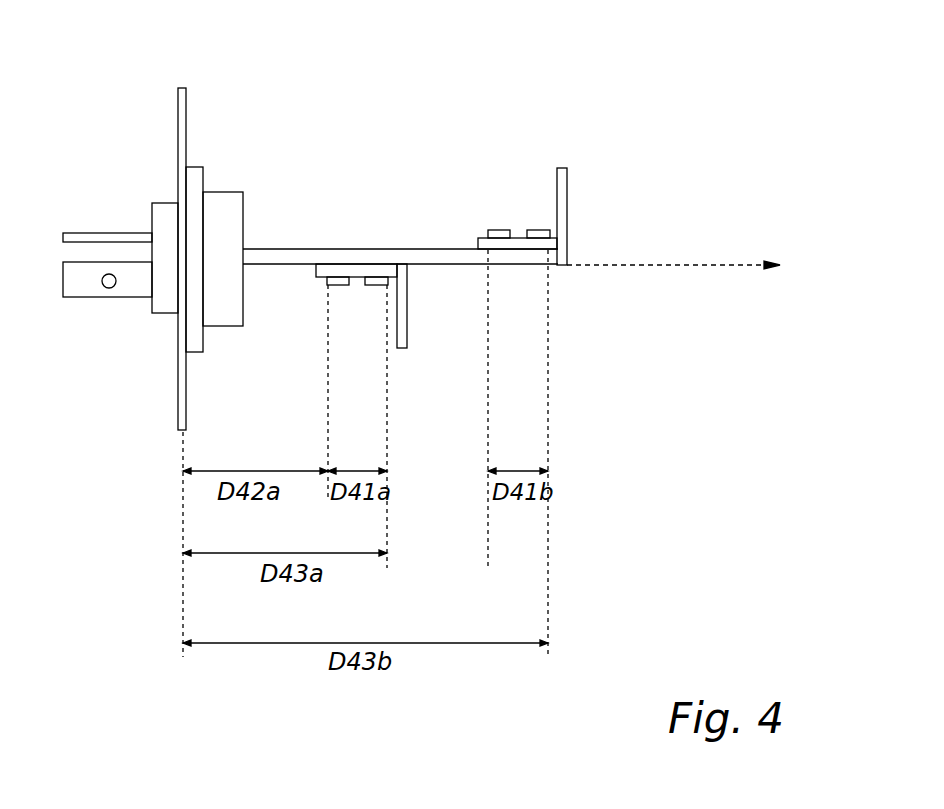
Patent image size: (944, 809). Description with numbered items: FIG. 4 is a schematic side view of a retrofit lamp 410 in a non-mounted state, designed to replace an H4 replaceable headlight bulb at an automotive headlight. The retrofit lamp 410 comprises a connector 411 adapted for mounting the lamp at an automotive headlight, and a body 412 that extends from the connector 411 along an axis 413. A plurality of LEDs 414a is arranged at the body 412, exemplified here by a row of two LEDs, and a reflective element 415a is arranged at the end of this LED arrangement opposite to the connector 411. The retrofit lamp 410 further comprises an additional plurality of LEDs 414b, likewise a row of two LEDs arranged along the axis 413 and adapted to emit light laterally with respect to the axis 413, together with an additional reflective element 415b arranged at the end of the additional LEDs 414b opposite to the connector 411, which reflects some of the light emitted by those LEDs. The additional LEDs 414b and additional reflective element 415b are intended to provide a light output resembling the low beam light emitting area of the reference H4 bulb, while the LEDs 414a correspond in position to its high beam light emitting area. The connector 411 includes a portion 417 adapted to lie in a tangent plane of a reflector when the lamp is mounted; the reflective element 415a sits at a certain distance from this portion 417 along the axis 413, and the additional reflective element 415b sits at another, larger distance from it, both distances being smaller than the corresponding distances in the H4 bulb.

The retrofit lamp 410 is at (528, 82).
The connector 411 is at (238, 163).
The body 412 is at (432, 248).
The axis 413 is at (697, 273).
The plurality of LEDs 414a is at (329, 285).
The additional plurality of LEDs 414b is at (498, 230).
The reflective element 415a is at (402, 325).
The additional reflective element 415b is at (567, 203).
The portion 417 is at (178, 401).